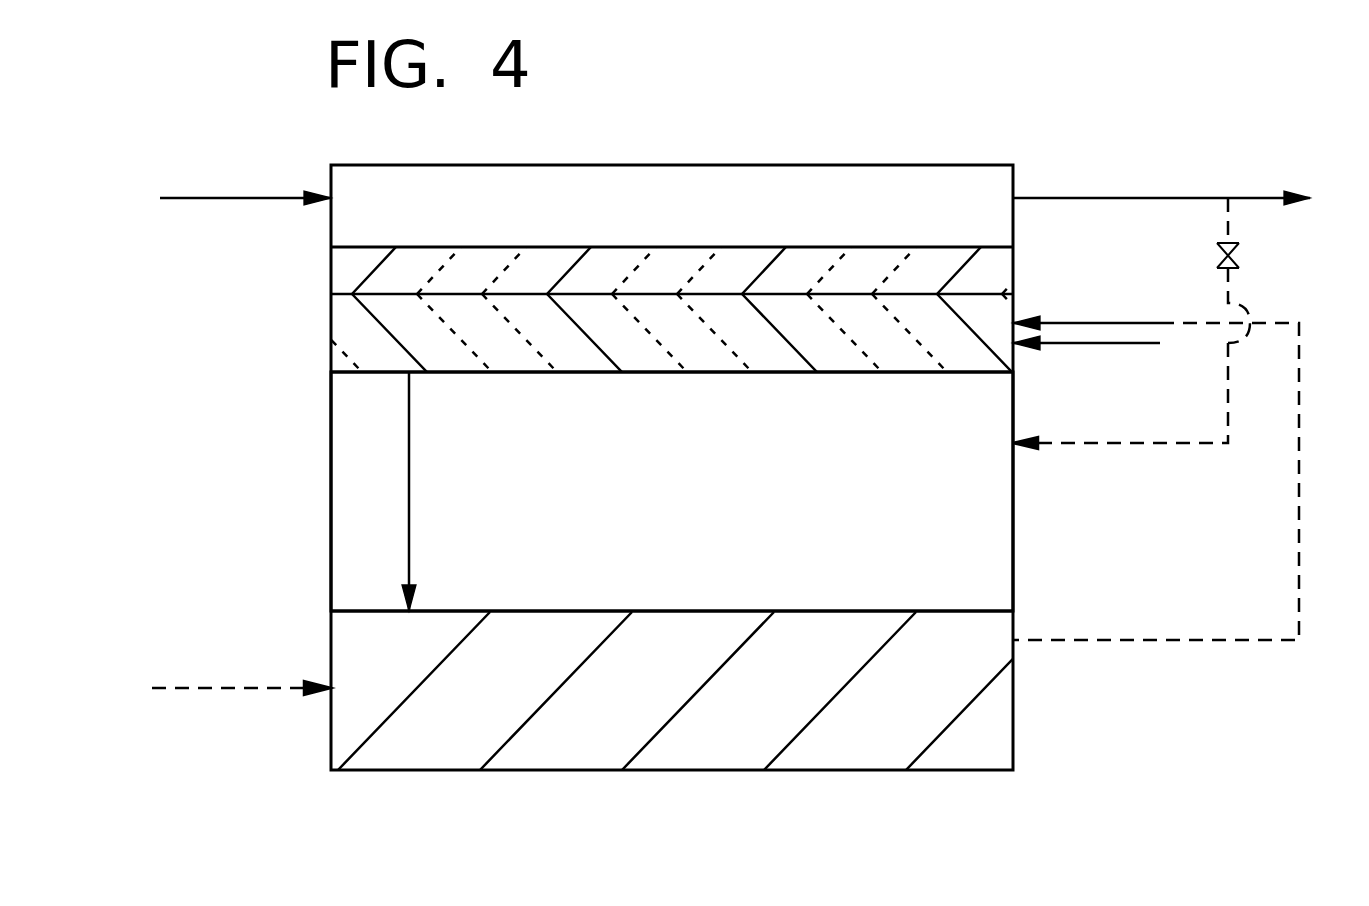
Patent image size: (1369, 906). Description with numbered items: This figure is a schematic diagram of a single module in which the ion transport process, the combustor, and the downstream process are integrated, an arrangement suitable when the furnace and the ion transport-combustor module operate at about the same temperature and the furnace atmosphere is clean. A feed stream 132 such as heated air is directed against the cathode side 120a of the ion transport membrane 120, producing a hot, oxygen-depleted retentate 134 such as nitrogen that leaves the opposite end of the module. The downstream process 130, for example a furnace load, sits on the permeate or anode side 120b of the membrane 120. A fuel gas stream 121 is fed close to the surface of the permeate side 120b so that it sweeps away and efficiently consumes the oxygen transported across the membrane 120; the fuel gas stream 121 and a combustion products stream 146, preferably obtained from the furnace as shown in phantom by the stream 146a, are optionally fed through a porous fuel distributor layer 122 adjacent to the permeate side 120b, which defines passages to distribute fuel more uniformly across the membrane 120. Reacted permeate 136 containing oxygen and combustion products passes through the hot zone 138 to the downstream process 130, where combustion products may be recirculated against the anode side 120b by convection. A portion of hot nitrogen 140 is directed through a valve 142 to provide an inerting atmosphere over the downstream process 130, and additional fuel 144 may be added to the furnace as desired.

The ion transport membrane 120 is at (676, 279).
The cathode side 120a is at (670, 247).
The anode side 120b is at (372, 294).
The fuel gas stream 121 is at (1124, 347).
The porous fuel distributor layer 122 is at (1013, 302).
The downstream process 130 is at (1015, 663).
The feed stream 132 is at (196, 198).
The retentate 134 is at (1163, 198).
The reacted permeate 136 is at (410, 477).
The hot zone 138 is at (842, 492).
The hot nitrogen 140 is at (1070, 445).
The valve 142 is at (1245, 253).
The additional fuel 144 is at (226, 688).
The combustion products stream 146 is at (1115, 323).
The combustion products stream from furnace 146a is at (1252, 640).